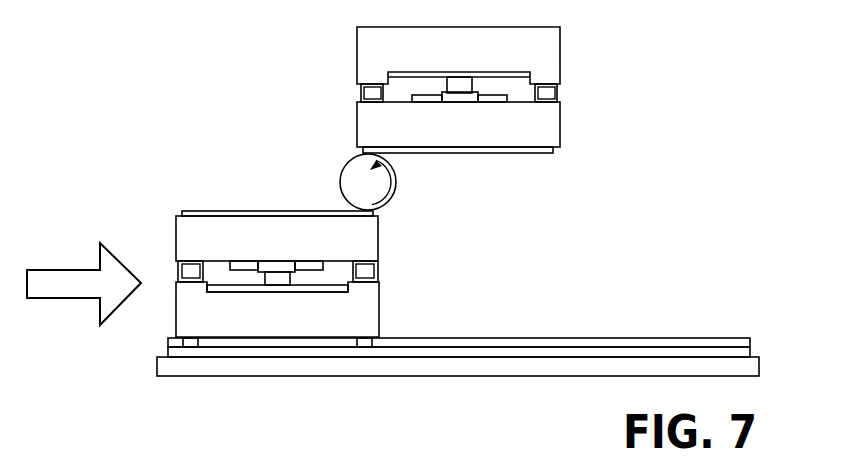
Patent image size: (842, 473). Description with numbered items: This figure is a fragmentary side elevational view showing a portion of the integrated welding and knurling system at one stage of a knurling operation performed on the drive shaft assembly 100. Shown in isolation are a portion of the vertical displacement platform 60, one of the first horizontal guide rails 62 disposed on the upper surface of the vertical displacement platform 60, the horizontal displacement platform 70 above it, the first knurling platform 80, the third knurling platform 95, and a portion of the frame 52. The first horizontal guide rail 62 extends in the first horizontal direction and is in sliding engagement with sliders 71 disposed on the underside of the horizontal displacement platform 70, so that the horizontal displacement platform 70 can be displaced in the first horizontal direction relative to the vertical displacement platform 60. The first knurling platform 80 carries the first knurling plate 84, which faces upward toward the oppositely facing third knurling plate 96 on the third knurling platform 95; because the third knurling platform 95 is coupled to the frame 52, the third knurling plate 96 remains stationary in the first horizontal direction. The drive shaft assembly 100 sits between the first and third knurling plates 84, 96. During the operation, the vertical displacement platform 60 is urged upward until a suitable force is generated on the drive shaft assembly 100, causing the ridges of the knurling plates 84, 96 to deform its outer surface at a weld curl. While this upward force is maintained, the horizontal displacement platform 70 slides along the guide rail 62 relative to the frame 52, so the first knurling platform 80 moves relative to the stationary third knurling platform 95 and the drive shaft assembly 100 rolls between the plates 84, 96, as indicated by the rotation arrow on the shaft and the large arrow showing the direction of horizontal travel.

The frame 52 is at (470, 53).
The vertical displacement platform 60 is at (422, 365).
The first horizontal guide rails 62 is at (457, 350).
The horizontal displacement platform 70 is at (265, 313).
The sliders 71 is at (193, 342).
The first knurling platform 80 is at (347, 237).
The first knurling plate 84 is at (275, 211).
The third knurling platform 95 is at (539, 127).
The third knurling plate 96 is at (478, 153).
The drive shaft assembly 100 is at (333, 170).